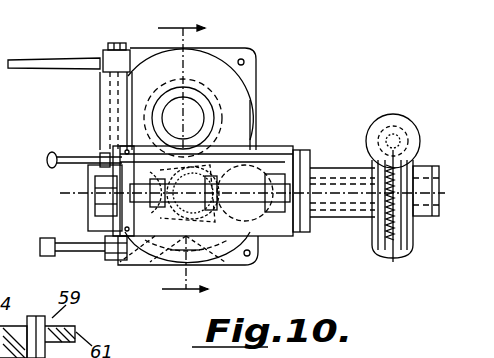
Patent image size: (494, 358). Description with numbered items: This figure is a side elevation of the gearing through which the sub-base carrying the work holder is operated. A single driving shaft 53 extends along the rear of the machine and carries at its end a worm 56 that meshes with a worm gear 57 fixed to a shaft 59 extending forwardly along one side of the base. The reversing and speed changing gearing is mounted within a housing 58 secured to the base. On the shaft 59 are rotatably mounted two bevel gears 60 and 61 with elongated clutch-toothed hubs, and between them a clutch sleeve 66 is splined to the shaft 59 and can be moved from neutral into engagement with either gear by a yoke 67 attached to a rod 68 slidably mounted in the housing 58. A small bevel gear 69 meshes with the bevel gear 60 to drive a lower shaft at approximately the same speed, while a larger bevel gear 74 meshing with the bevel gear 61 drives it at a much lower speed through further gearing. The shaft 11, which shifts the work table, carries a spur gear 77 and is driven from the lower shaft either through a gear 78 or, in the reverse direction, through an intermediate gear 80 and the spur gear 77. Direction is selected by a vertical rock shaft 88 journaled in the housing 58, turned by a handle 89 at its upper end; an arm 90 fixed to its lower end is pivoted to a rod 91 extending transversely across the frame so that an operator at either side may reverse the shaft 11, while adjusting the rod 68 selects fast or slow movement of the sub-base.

The shaft 11 is at (165, 157).
The driving shaft 53 is at (398, 122).
The worm 56 is at (412, 142).
The worm gear 57 is at (417, 172).
The housing 58 is at (345, 168).
The shaft 59 is at (100, 160).
The bevel gear 60 is at (130, 260).
The bevel gear 61 is at (285, 150).
The clutch sleeve 66 is at (258, 242).
The yoke 67 is at (252, 152).
The rod 68 is at (78, 166).
The small bevel gear 69 is at (228, 258).
The bevel gear 74 is at (265, 233).
The spur gear 77 is at (228, 98).
The gear 78 is at (140, 268).
The intermediate gear 80 is at (236, 148).
The rock shaft 88 is at (108, 108).
The handle 89 is at (42, 65).
The arm 90 is at (72, 246).
The rod 91 is at (40, 247).